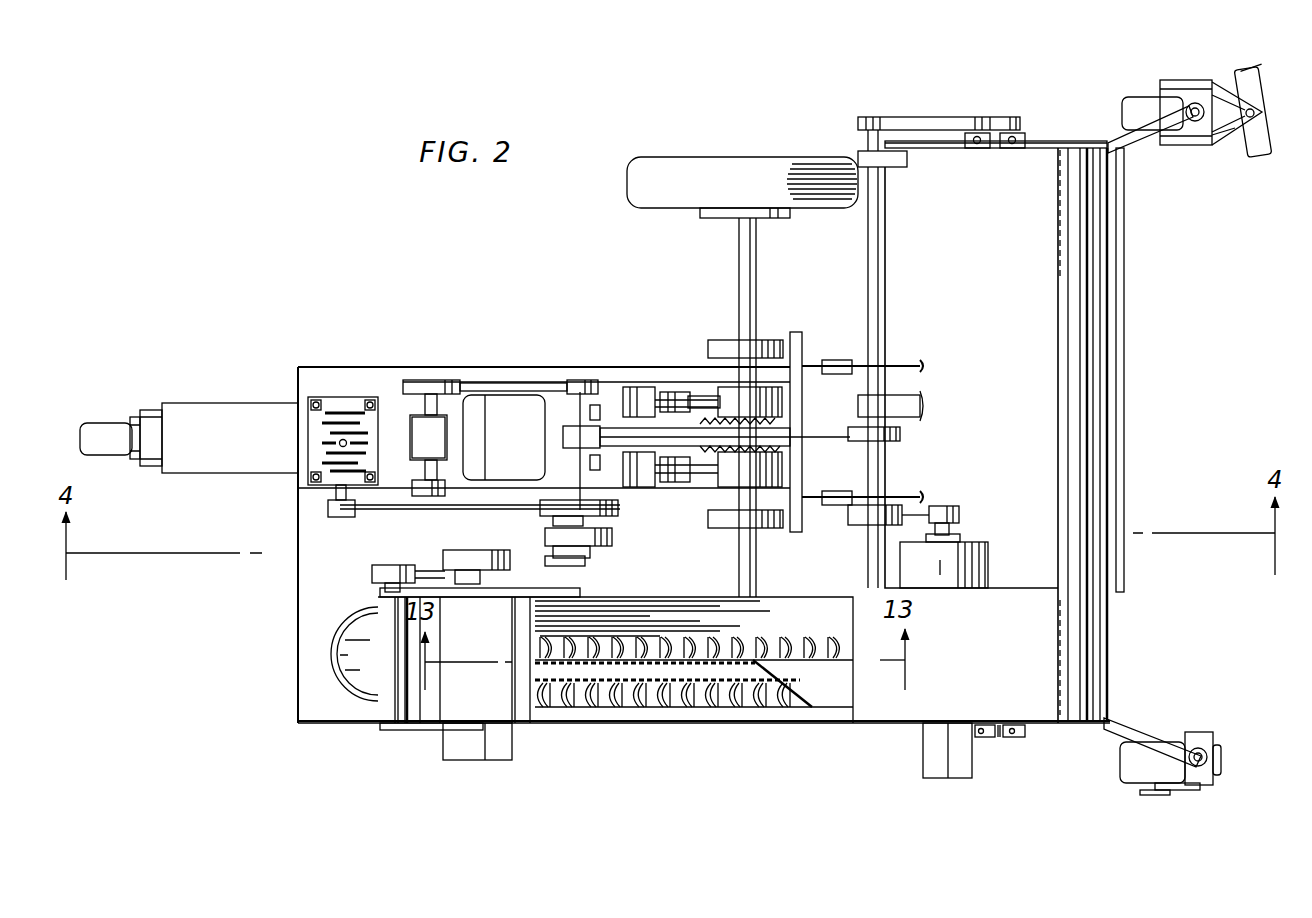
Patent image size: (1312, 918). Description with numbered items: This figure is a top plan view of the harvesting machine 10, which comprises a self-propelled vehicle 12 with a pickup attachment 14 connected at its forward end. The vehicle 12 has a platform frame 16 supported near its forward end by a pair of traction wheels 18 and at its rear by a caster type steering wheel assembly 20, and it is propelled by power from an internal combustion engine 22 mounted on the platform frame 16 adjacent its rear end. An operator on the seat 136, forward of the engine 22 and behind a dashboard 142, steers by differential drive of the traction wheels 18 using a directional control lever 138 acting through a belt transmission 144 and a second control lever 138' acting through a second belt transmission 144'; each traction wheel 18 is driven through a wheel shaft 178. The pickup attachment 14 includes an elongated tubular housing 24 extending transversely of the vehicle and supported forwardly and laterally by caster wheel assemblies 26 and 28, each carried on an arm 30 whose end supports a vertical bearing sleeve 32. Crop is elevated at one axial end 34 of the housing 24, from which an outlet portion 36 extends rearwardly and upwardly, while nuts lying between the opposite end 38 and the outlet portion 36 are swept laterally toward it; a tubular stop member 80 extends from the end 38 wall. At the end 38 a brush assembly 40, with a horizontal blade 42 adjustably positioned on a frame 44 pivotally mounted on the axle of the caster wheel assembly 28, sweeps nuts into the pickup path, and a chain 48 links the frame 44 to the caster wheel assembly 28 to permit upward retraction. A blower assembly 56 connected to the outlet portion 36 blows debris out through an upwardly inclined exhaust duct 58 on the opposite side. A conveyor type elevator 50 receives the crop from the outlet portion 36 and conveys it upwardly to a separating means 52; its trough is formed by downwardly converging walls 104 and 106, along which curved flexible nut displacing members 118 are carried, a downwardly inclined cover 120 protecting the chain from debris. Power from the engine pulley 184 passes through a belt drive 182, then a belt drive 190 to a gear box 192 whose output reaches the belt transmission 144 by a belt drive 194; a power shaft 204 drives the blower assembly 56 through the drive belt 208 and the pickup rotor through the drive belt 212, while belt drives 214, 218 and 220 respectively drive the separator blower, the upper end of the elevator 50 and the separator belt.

The harvesting machine 10 is at (354, 258).
The self-propelled vehicle 12 is at (276, 364).
The pickup attachment 14 is at (985, 770).
The platform frame 16 is at (346, 710).
The traction wheels 18 is at (718, 176).
The caster type steering wheel assembly 20 is at (183, 396).
The internal combustion engine 22 is at (325, 398).
The pickup housing 24 is at (1063, 158).
The caster wheel assembly 26 is at (1182, 790).
The caster wheel assembly 28 is at (1140, 84).
The arm 30 is at (1118, 735).
The vertical bearing sleeve 32 is at (1197, 748).
The axial end 34 is at (1048, 734).
The outlet portion 36 is at (893, 688).
The end 38 is at (1036, 142).
The brush assembly 40 is at (1280, 94).
The horizontal blade 42 is at (1259, 80).
The frame 44 is at (1228, 138).
The chain 48 is at (1222, 92).
The conveyor type elevator 50 is at (714, 728).
The separating means 52 is at (500, 740).
The blower assembly 56 is at (996, 572).
The exhaust duct 58 is at (936, 767).
The tubular stop member 80 is at (1109, 344).
The trough wall 104 is at (690, 632).
The trough wall 106 is at (862, 522).
The nut displacing members 118 is at (810, 646).
The cover 120 is at (828, 686).
The seat 136 is at (518, 405).
The directional control lever 138 is at (702, 492).
The second control lever 138' is at (696, 380).
The dashboard 142 is at (802, 421).
The belt transmission 144 is at (778, 489).
The second belt transmission 144' is at (726, 336).
The wheel shaft 178 is at (752, 580).
The belt drive 182 is at (390, 511).
The engine pulley 184 is at (340, 517).
The belt drive 190 is at (468, 388).
The gear box 192 is at (432, 437).
The belt drive 194 is at (614, 510).
The power shaft 204 is at (867, 258).
The drive belt 208 is at (920, 520).
The drive belt 212 is at (918, 130).
The belt drive 214 is at (602, 573).
The belt drive 218 is at (522, 560).
The belt drive 220 is at (430, 575).